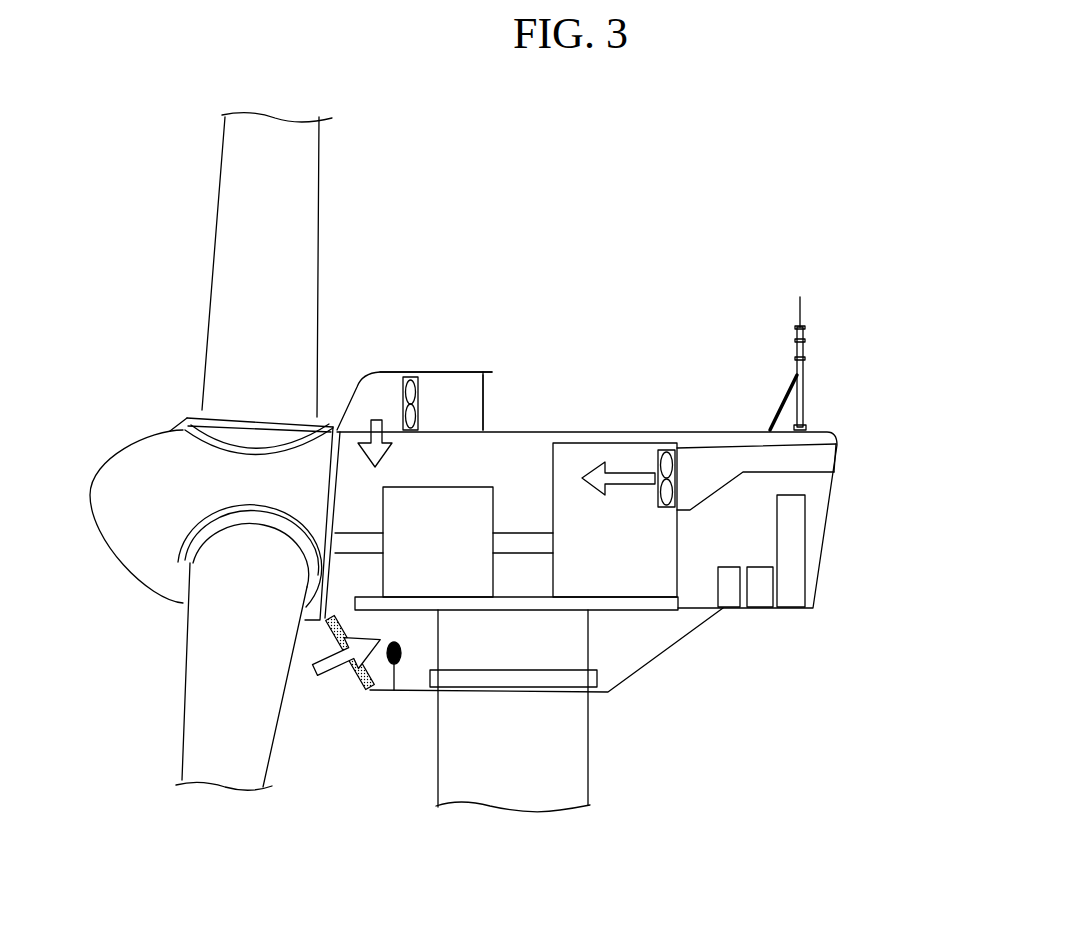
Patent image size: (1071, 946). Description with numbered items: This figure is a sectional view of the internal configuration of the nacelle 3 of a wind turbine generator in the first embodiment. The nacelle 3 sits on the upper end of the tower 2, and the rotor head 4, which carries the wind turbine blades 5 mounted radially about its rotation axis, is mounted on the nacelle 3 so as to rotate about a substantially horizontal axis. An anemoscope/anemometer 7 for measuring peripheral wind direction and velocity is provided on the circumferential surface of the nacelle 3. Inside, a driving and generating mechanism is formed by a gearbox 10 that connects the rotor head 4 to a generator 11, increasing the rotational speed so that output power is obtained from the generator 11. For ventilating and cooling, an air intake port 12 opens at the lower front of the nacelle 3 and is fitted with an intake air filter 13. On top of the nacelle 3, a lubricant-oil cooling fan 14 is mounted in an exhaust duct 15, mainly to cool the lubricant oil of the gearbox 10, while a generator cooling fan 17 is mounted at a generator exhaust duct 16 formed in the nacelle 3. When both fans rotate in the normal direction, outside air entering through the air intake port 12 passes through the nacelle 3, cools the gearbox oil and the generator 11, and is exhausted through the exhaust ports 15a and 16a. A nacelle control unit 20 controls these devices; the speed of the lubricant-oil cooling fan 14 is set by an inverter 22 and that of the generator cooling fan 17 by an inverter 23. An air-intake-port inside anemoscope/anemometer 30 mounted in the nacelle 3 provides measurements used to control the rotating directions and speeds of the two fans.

The tower 2 is at (563, 753).
The nacelle 3 is at (672, 281).
The rotor head 4 is at (143, 573).
The wind turbine blade 5 is at (300, 164).
The anemoscope/anemometer 7 is at (805, 390).
The gearbox 10 is at (452, 486).
The generator 11 is at (677, 538).
The air intake port 12 is at (346, 672).
The intake air filter 13 is at (363, 690).
The lubricant-oil cooling fan 14 is at (412, 392).
The exhaust duct 15 is at (477, 372).
The exhaust port 15a is at (483, 395).
The generator exhaust duct 16 is at (720, 443).
The exhaust port 16a is at (840, 455).
The generator cooling fan 17 is at (668, 460).
The nacelle control unit 20 is at (800, 563).
The inverter for the lubricant-oil cooling fan 22 is at (732, 598).
The inverter for the generator cooling fan 23 is at (763, 598).
The air-intake-port inside anemoscope/anemometer 30 is at (403, 662).